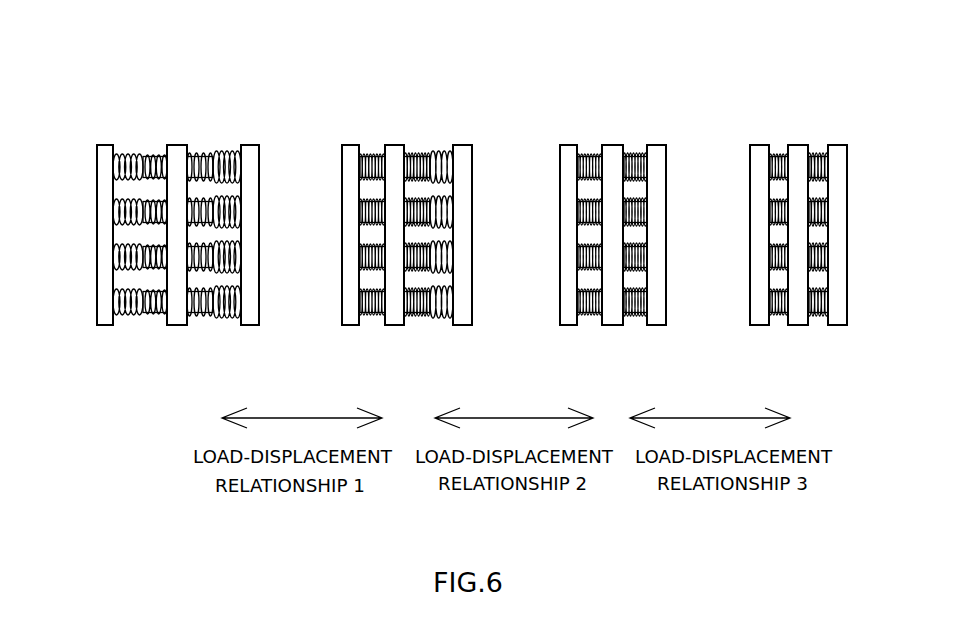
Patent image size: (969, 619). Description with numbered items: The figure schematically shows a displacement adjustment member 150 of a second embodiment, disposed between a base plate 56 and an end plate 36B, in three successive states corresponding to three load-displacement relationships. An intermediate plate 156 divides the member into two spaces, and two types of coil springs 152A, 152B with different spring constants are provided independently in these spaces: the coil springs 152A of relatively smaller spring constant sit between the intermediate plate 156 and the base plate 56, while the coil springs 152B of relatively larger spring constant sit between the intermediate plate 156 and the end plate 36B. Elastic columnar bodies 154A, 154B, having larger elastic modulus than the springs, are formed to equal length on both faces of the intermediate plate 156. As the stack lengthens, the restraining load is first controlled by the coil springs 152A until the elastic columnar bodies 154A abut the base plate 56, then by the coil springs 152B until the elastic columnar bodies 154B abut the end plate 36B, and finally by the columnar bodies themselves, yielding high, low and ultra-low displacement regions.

The displacement adjustment member 150 is at (160, 98).
The base plate 56 is at (95, 173).
The intermediate plate 156 is at (178, 145).
The end plate 36B is at (258, 157).
The coil spring 152A is at (132, 155).
The coil spring 152B is at (220, 150).
The elastic columnar body 154A is at (152, 310).
The elastic columnar body 154B is at (197, 308).